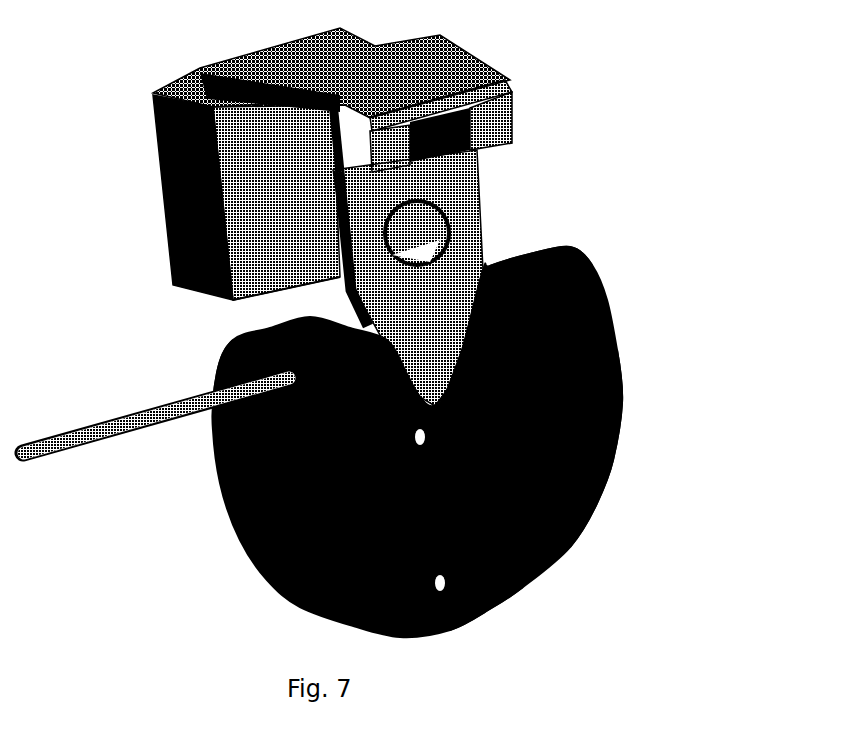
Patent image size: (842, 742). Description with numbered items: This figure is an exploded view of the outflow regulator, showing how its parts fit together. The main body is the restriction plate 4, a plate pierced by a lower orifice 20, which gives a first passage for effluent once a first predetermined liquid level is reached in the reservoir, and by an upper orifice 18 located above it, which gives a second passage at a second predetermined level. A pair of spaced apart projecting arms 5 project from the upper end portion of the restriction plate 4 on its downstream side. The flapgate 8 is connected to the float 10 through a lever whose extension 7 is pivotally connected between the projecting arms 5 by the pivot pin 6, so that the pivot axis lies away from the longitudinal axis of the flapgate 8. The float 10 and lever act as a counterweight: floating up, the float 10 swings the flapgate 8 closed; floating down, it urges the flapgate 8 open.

The restriction plate 4 is at (253, 558).
The projecting arms 5 is at (213, 463).
The pivot pin 6 is at (152, 392).
The extension 7 is at (500, 117).
The flapgate 8 is at (480, 223).
The float 10 is at (250, 170).
The upper orifice 18 is at (613, 460).
The lower orifice 20 is at (497, 607).